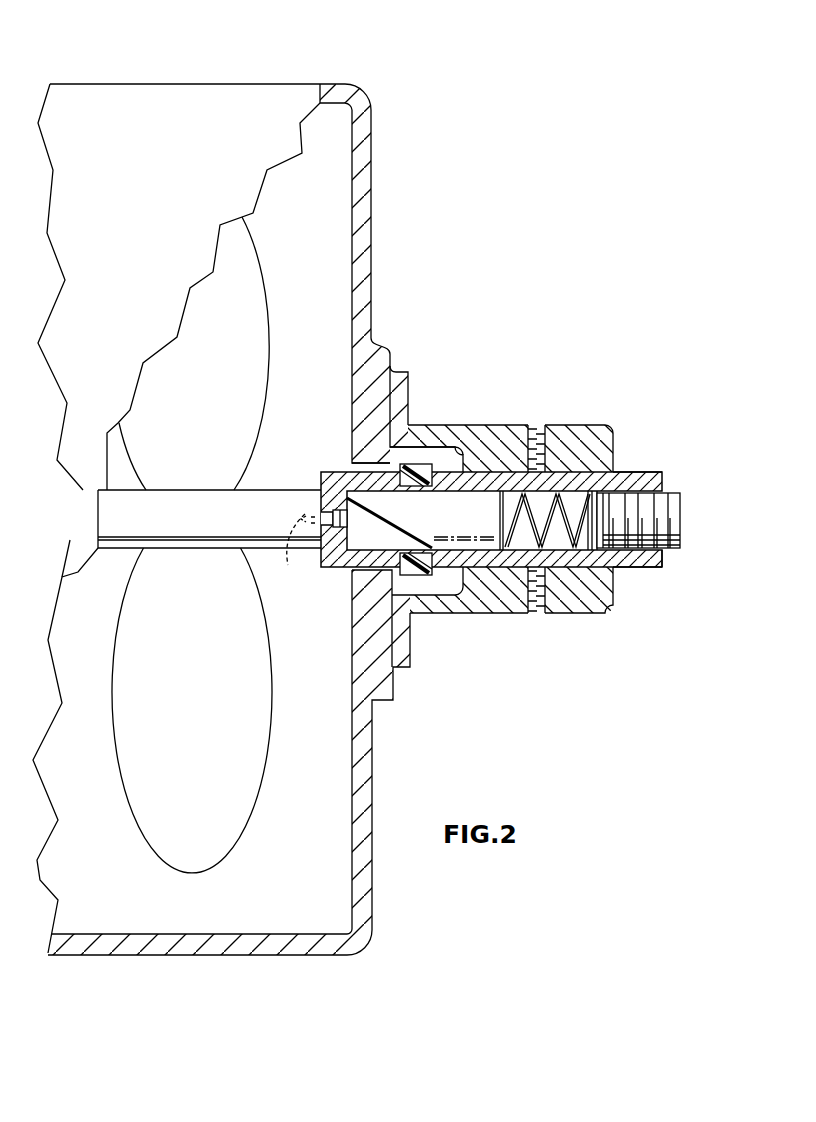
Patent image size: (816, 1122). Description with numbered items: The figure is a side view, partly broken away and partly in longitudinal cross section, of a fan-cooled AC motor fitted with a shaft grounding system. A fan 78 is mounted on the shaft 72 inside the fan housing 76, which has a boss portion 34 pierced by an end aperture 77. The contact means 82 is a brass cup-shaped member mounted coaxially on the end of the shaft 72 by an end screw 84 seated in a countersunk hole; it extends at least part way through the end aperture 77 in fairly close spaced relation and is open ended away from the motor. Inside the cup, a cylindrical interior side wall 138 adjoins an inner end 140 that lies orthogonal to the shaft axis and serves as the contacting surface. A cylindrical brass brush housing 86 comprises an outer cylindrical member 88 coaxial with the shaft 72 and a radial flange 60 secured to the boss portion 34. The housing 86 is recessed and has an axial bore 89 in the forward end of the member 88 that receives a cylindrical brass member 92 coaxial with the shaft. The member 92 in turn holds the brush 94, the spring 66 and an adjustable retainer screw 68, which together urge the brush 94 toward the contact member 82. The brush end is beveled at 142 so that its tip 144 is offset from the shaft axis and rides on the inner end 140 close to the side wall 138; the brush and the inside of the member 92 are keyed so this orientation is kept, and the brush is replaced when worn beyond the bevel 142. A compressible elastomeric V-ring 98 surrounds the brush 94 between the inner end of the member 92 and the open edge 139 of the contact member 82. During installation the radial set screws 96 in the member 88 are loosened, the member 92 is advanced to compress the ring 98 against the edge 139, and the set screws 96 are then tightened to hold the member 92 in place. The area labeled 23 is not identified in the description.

The fan housing 76 is at (278, 84).
The fan 78 is at (268, 308).
The boss portion 34 is at (396, 354).
The radial flange 60 is at (398, 670).
The inner end 140 is at (358, 574).
The bevel 142 is at (404, 600).
The brush housing 86 is at (521, 420).
The outer cylindrical member 88 is at (583, 616).
The radial set screws 96 is at (542, 437).
The spring 66 is at (598, 470).
The contact means 82 is at (319, 586).
The end aperture 77 is at (340, 471).
The axial bore 89 is at (622, 471).
The cylindrical brass member 92 is at (637, 570).
The brush 94 is at (485, 500).
The pocket 23 is at (460, 448).
The compressible ring 98 is at (418, 463).
The open edge 139 is at (412, 578).
The cylindrical interior side wall 138 is at (381, 512).
The brush tip 144 is at (304, 508).
The shaft 72 is at (165, 552).
The end screw 84 is at (287, 549).
The retainer screw 68 is at (681, 518).